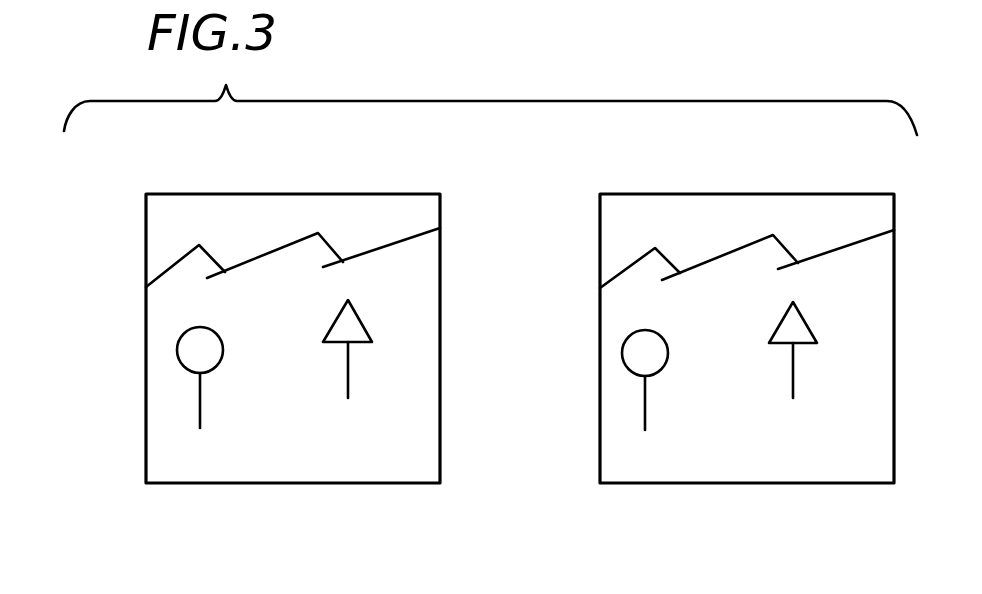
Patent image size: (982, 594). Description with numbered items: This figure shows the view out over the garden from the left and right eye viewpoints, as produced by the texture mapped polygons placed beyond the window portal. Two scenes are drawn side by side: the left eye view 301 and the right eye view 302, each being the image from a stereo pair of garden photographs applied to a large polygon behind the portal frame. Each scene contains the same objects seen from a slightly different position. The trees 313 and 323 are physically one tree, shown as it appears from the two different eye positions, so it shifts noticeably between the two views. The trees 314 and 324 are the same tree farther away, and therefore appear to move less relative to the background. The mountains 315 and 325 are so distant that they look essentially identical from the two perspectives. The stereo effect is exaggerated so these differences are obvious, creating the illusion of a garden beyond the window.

The left eye view 301 is at (168, 487).
The right eye view 302 is at (642, 487).
The tree 313 is at (197, 420).
The tree 314 is at (349, 390).
The mountains 315 is at (258, 260).
The tree 323 is at (648, 420).
The tree 324 is at (794, 392).
The mountains 325 is at (712, 262).